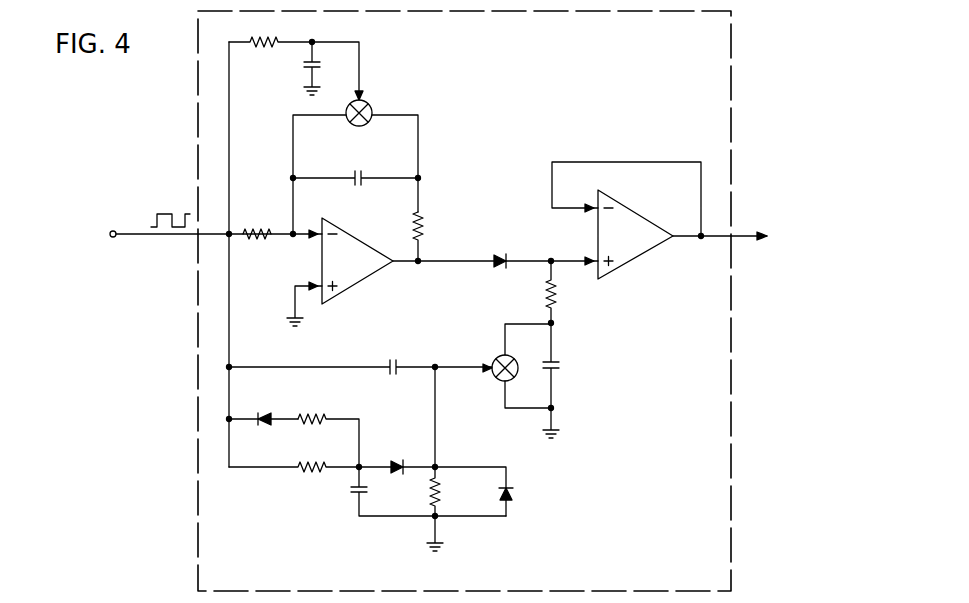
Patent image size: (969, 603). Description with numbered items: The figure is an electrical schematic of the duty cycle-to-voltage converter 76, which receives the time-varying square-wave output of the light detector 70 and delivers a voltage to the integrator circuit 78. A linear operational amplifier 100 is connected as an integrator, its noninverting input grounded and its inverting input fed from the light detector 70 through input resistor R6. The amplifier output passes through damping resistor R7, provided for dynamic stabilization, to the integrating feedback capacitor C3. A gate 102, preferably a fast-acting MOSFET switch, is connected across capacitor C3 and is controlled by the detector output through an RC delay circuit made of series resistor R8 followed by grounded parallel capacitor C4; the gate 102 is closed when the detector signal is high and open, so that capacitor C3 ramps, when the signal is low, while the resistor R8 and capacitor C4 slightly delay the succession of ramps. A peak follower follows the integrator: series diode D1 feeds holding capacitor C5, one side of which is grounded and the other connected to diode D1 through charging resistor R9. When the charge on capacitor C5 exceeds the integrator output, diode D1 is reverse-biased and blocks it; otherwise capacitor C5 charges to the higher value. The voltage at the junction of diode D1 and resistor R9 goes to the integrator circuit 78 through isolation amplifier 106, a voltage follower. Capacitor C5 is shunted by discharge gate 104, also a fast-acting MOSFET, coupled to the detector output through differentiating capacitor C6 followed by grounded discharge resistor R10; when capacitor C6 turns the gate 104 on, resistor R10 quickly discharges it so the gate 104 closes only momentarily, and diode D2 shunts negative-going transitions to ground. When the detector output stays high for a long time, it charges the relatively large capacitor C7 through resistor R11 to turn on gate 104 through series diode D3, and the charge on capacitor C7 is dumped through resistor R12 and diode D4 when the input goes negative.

The light detector 70 is at (164, 224).
The duty cycle-to-voltage converter 76 is at (464, 301).
The integrator circuit 78 is at (780, 245).
The linear operational amplifier 100 is at (340, 272).
The gate 102 is at (349, 124).
The discharge gate 104 is at (495, 379).
The isolation amplifier 106 is at (626, 220).
The input resistor R6 is at (257, 223).
The damping resistor R7 is at (432, 236).
The series resistor R8 is at (294, 56).
The charging resistor R9 is at (538, 292).
The discharge resistor R10 is at (452, 509).
The resistor R11 is at (310, 456).
The resistor R12 is at (327, 429).
The integrating feedback capacitor C3 is at (355, 186).
The grounded parallel capacitor C4 is at (300, 68).
The holding capacitor C5 is at (564, 380).
The differentiating capacitor C6 is at (332, 354).
The capacitor C7 is at (428, 491).
The series diode D1 is at (500, 251).
The diode D2 is at (519, 498).
The series diode D3 is at (447, 464).
The diode D4 is at (263, 408).